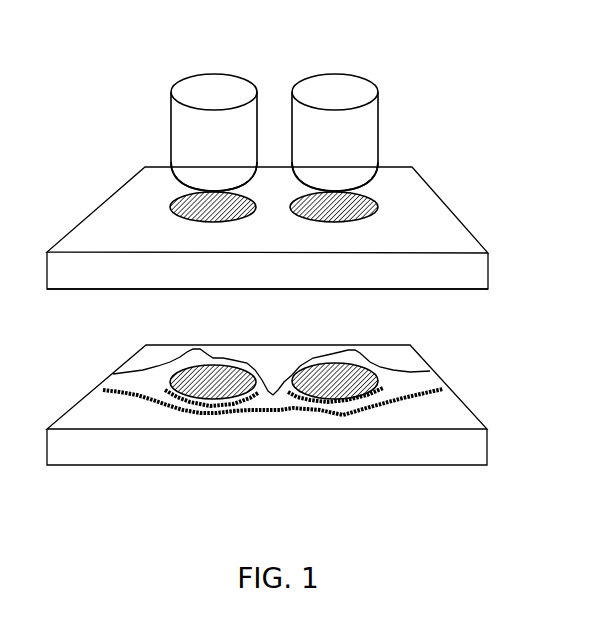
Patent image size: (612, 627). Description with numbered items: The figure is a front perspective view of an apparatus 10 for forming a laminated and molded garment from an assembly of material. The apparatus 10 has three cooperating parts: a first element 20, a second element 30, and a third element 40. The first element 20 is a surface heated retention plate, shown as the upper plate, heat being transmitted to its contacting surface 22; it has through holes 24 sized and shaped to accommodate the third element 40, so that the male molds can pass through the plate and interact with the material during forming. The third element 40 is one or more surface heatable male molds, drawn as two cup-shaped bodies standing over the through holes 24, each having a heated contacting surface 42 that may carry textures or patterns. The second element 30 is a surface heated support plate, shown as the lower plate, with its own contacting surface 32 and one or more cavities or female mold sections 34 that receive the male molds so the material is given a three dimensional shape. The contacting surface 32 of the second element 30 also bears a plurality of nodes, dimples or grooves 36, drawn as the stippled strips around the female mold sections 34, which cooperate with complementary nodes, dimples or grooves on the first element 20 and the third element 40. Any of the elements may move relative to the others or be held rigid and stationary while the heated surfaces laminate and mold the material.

The apparatus for forming a laminated and molded garment 10 is at (108, 95).
The first element 20 is at (417, 217).
The contacting surface 22 is at (455, 289).
The through holes 24 is at (188, 193).
The second element 30 is at (100, 415).
The contacting surface 32 is at (145, 382).
The female mold sections 34 is at (320, 367).
The nodes, dimples or grooves 36 is at (315, 403).
The third element 40 is at (214, 150).
The contacting surface 42 is at (310, 175).